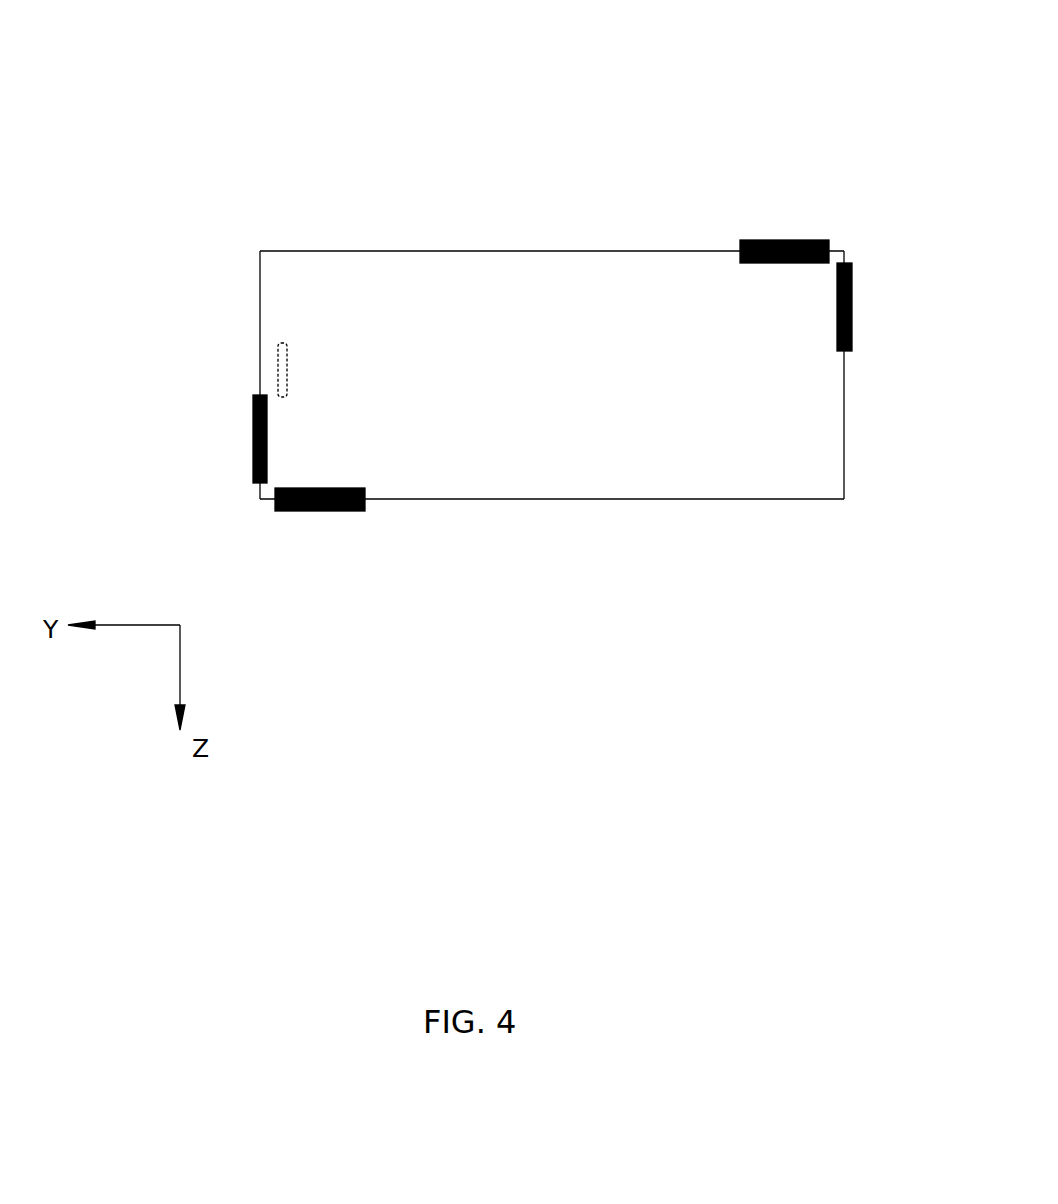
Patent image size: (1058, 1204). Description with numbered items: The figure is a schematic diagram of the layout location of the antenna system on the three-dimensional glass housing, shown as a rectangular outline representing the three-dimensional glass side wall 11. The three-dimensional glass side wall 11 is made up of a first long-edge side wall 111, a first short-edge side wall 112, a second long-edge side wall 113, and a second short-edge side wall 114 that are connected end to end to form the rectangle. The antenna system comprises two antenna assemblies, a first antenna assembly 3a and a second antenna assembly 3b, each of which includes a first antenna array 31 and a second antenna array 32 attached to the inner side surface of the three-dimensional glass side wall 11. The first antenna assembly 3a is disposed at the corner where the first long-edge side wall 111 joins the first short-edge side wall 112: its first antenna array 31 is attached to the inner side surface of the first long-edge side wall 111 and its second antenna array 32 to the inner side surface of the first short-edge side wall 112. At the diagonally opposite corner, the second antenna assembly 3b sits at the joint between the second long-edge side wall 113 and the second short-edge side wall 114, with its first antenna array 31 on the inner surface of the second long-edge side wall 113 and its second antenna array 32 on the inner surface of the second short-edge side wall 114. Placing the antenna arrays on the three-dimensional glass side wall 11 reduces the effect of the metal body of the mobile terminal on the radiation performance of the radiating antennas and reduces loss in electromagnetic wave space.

The 3D glass side wall 11 is at (541, 404).
The first long-edge side wall 111 is at (473, 250).
The first short-edge side wall 112 is at (844, 430).
The second long-edge side wall 113 is at (535, 499).
The second short-edge side wall 114 is at (260, 288).
The first antenna array 31 is at (789, 240).
The second antenna array 32 is at (852, 303).
The first antenna assembly 3a is at (762, 173).
The second antenna assembly 3b is at (342, 552).